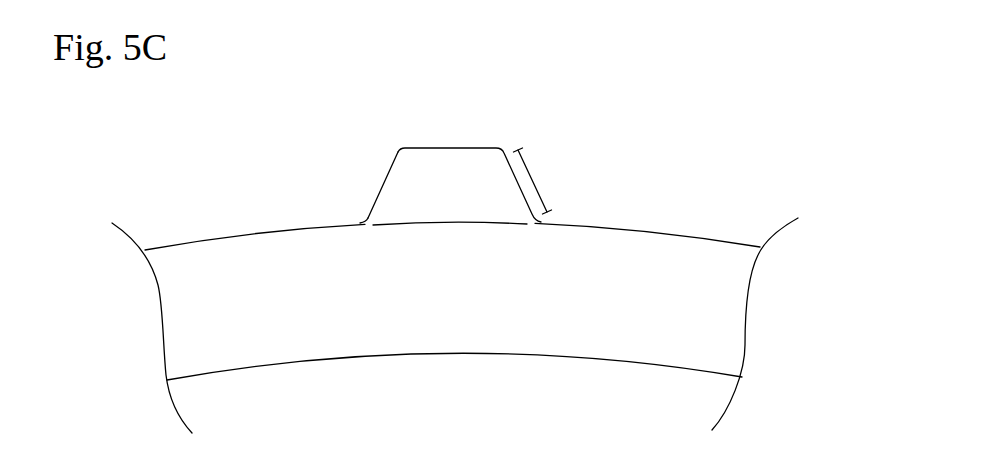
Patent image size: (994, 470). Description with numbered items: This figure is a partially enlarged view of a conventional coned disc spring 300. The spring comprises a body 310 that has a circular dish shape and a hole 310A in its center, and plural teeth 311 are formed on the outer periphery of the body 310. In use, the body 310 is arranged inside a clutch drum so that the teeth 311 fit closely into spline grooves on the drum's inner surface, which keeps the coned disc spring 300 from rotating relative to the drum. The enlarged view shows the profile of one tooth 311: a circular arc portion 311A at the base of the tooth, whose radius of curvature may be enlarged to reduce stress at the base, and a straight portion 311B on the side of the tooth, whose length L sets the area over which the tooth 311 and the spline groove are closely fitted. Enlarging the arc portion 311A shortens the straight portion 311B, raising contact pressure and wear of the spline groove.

The coned disc spring 300 is at (624, 142).
The body 310 is at (613, 342).
The hole 310A is at (230, 420).
The teeth 311 is at (457, 167).
The circular arc portion 311A is at (363, 222).
The straight portion 311B is at (386, 178).